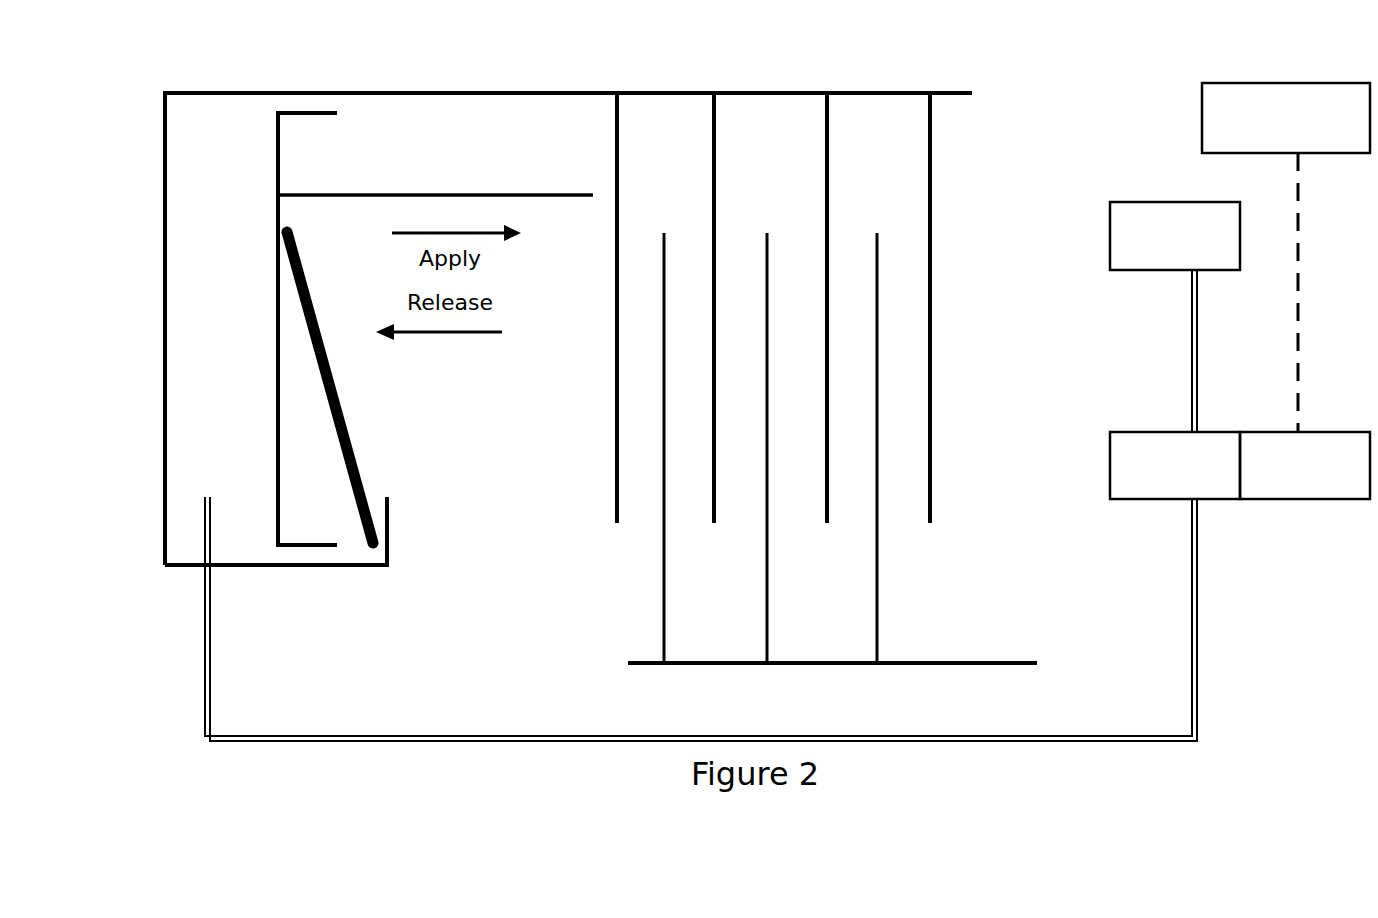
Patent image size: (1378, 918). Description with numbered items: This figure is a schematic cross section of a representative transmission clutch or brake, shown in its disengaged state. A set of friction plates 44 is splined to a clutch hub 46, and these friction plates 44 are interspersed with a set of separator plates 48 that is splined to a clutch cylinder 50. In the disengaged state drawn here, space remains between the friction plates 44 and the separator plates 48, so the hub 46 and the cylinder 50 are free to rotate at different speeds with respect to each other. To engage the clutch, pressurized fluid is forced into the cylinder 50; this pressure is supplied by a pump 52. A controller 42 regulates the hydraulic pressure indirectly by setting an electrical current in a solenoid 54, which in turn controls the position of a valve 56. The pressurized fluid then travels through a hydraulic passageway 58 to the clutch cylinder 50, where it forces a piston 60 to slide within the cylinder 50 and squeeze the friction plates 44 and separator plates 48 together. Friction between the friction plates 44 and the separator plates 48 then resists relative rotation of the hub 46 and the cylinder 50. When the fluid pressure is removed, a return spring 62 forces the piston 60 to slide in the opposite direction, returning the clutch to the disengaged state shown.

The controller 42 is at (1202, 117).
The friction plates 44 is at (662, 547).
The clutch hub 46 is at (853, 663).
The separator plates 48 is at (617, 372).
The clutch cylinder 50 is at (512, 92).
The pump 52 is at (1110, 237).
The solenoid 54 is at (1303, 502).
The valve 56 is at (1110, 475).
The hydraulic passageway 58 is at (205, 648).
The piston 60 is at (278, 462).
The return spring 62 is at (338, 392).